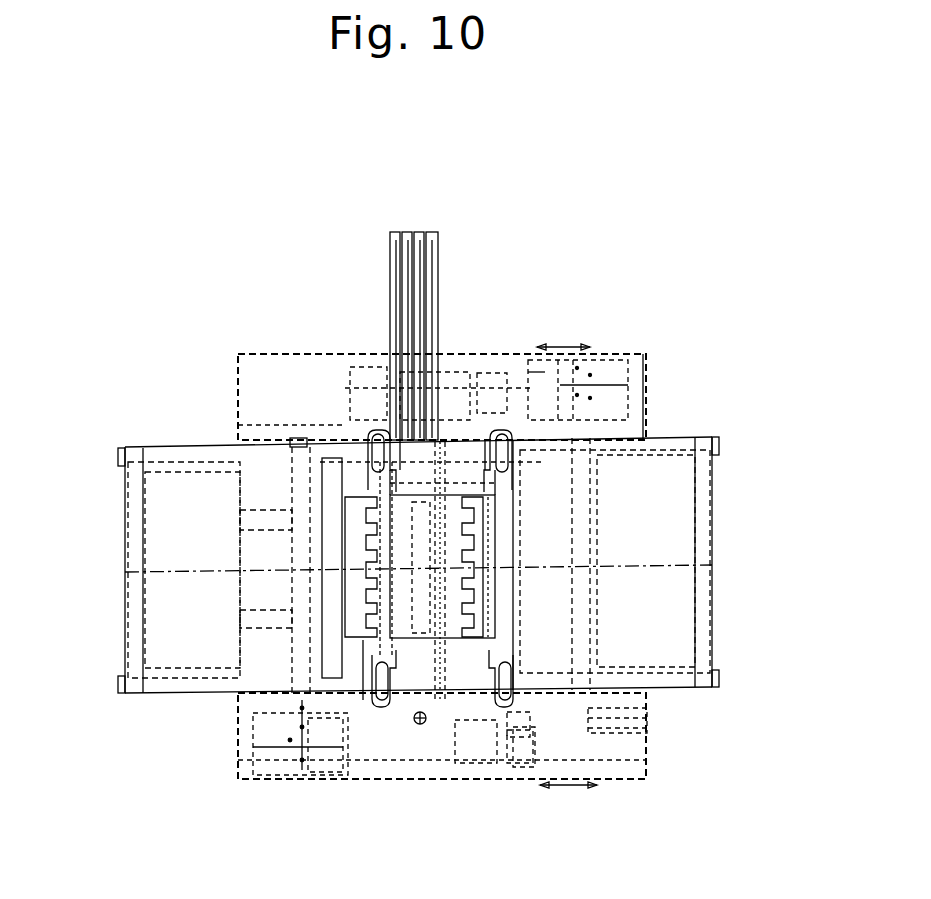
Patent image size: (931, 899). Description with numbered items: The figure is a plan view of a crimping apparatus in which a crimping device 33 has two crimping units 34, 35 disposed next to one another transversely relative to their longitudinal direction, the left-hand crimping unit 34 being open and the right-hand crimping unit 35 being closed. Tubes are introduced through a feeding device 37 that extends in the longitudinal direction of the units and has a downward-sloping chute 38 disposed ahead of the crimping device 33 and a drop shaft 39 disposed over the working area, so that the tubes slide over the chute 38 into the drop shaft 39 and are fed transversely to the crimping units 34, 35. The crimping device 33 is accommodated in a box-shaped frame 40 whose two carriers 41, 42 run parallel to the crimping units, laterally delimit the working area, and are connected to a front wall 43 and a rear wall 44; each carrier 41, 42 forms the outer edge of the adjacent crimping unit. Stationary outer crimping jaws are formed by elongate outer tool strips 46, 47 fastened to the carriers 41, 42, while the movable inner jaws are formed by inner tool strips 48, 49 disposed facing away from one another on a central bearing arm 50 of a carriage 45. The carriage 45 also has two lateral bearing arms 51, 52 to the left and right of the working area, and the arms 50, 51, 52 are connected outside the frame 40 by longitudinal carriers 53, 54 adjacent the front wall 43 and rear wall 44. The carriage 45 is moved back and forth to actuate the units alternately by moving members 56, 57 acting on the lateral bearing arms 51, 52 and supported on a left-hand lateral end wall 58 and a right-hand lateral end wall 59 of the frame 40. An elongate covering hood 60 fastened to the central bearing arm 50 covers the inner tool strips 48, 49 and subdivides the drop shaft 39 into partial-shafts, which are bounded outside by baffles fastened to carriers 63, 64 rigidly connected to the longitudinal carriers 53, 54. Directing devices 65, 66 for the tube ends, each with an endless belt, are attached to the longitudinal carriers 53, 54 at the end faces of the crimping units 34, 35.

The crimping device 33 is at (718, 398).
The crimping unit 34 is at (360, 482).
The crimping unit 35 is at (484, 480).
The feeding device 37 is at (438, 226).
The chute 38 is at (425, 265).
The drop shaft 39 is at (362, 655).
The frame 40 is at (165, 440).
The carrier 41 is at (415, 592).
The carrier 42 is at (507, 593).
The front wall 43 is at (157, 688).
The rear wall 44 is at (143, 455).
The carriage 45 is at (242, 348).
The outer tool strip 46 is at (350, 625).
The outer tool strip 47 is at (483, 620).
The inner tool strip 48 is at (420, 637).
The inner tool strip 49 is at (477, 537).
The central bearing arm 50 is at (443, 592).
The lateral bearing arm 51 is at (298, 485).
The lateral bearing arm 52 is at (582, 513).
The longitudinal carrier 53 is at (283, 708).
The longitudinal carrier 54 is at (609, 425).
The moving members 56 is at (157, 538).
The moving members 57 is at (685, 545).
The left-hand lateral end wall 58 is at (132, 647).
The right-hand lateral end wall 59 is at (708, 645).
The covering hood 60 is at (442, 513).
The carrier 63 is at (390, 512).
The carrier 64 is at (495, 510).
The directing device 65 is at (403, 467).
The directing device 66 is at (408, 700).